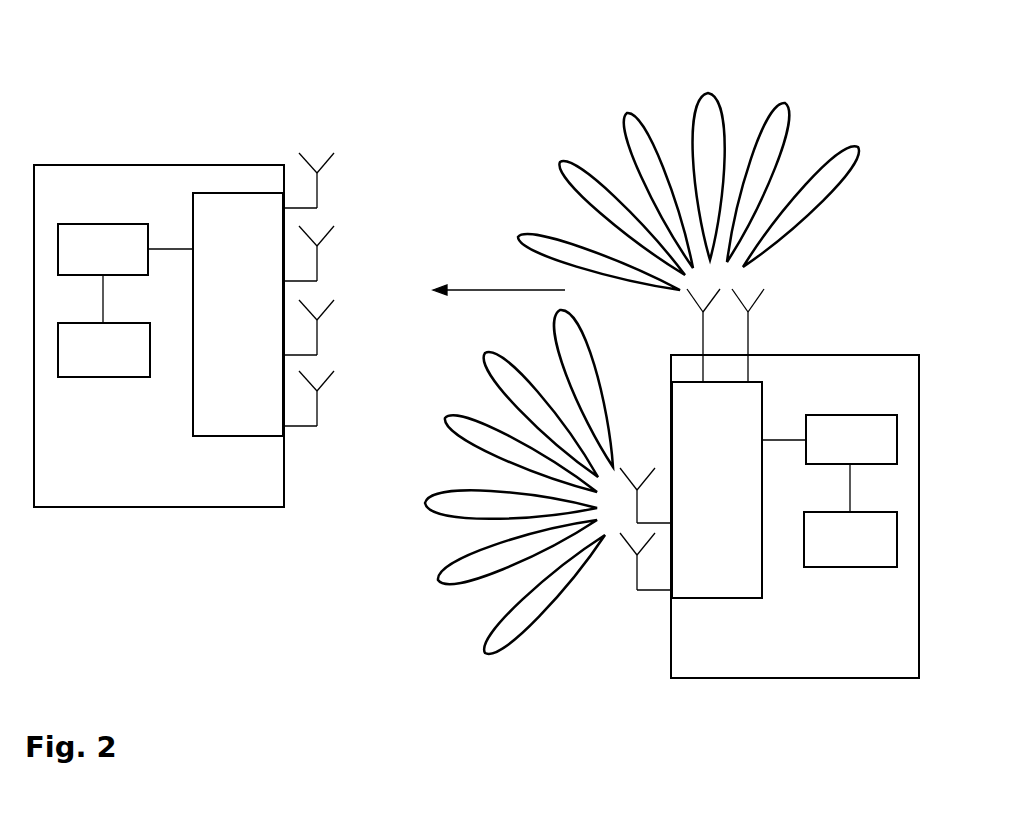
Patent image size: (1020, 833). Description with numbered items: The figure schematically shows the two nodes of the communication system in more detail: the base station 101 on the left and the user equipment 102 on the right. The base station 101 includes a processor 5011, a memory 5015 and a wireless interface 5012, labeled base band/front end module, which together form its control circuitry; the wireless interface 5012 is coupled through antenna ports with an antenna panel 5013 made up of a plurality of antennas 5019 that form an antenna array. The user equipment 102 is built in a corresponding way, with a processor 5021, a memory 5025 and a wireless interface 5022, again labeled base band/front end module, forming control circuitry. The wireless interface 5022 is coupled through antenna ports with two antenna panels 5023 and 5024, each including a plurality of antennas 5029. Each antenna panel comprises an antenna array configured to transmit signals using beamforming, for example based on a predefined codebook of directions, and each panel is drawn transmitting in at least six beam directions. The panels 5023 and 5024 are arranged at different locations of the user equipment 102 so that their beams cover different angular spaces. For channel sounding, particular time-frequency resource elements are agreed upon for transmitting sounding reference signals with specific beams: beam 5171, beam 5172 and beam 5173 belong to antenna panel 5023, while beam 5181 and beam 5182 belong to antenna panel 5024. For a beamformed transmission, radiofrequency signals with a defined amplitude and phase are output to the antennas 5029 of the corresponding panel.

The base station 101 is at (158, 165).
The processor 5011 is at (108, 224).
The wireless interface 5012 is at (208, 438).
The antenna panel 5013 is at (348, 90).
The memory 5015 is at (104, 377).
The antennas 5019 is at (337, 167).
The user equipment 102 is at (838, 354).
The processor 5021 is at (834, 414).
The wireless interface 5022 is at (732, 600).
The antenna panel 5023 is at (615, 643).
The antenna panel 5024 is at (826, 271).
The memory 5025 is at (855, 568).
The antennas 5029 is at (689, 300).
The beam 5171 is at (554, 346).
The beam 5172 is at (490, 380).
The beam 5173 is at (483, 455).
The beam 5181 is at (563, 160).
The beam 5182 is at (540, 228).